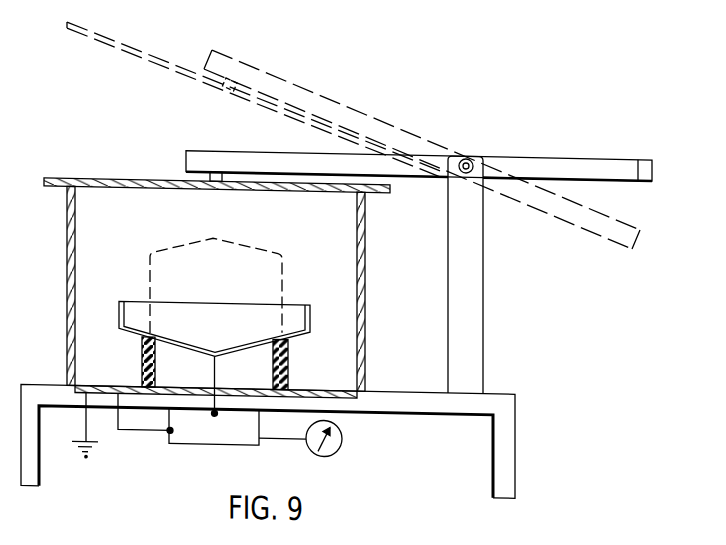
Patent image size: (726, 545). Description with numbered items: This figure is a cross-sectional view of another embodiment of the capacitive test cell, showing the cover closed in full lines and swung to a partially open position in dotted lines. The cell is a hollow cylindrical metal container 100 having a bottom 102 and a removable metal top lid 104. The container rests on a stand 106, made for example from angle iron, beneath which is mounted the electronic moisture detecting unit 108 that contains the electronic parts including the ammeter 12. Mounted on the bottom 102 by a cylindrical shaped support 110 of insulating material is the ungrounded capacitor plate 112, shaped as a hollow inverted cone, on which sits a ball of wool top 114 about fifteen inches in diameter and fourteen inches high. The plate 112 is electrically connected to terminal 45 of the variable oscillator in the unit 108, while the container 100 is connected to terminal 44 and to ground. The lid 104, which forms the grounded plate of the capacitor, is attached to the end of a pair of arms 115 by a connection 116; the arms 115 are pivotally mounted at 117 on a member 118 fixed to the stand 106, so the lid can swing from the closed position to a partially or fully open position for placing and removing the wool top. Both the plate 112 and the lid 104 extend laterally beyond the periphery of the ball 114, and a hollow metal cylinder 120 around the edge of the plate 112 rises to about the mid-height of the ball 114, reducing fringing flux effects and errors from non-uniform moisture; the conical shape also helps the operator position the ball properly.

The hollow cylindrical metal container 100 is at (95, 166).
The removable metal top lid 104 is at (137, 176).
The bottom 102 is at (336, 386).
The stand 106 is at (506, 439).
The arms 115 is at (252, 152).
The connection 116 is at (218, 172).
The pivot 117 is at (472, 150).
The member 118 is at (468, 283).
The ball of wool top 114 is at (243, 247).
The hollow metal cylinder 120 is at (216, 312).
The ungrounded capacitor plate 112 is at (298, 326).
The cylindrical shaped support 110 is at (289, 352).
The terminal 45 is at (215, 410).
The terminal 44 is at (166, 430).
The electronic moisture detecting unit 108 is at (183, 432).
The ammeter 12 is at (338, 441).